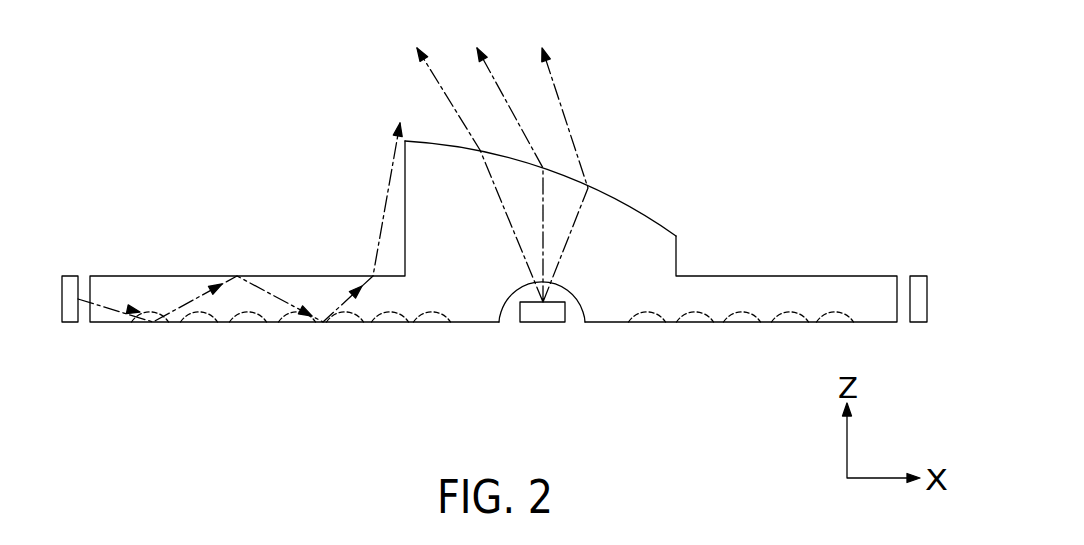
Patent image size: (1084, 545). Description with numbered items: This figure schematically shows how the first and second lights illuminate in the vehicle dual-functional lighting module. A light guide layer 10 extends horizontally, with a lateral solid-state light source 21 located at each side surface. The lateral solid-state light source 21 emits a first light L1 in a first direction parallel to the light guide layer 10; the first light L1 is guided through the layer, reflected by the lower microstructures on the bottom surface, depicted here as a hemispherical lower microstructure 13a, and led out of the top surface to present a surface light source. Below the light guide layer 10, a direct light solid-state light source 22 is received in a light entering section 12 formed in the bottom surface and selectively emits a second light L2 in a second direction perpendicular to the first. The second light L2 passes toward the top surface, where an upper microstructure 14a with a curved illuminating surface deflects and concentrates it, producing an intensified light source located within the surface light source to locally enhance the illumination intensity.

The light guide layer 10 is at (762, 276).
The light entering section 12 is at (503, 295).
The hemispherical lower microstructure 13a is at (692, 322).
The upper microstructure 14a is at (615, 200).
The lateral solid-state light source 21 is at (72, 313).
The direct light solid-state light source 22 is at (543, 312).
The first light L1 is at (122, 309).
The second light L2 is at (555, 88).